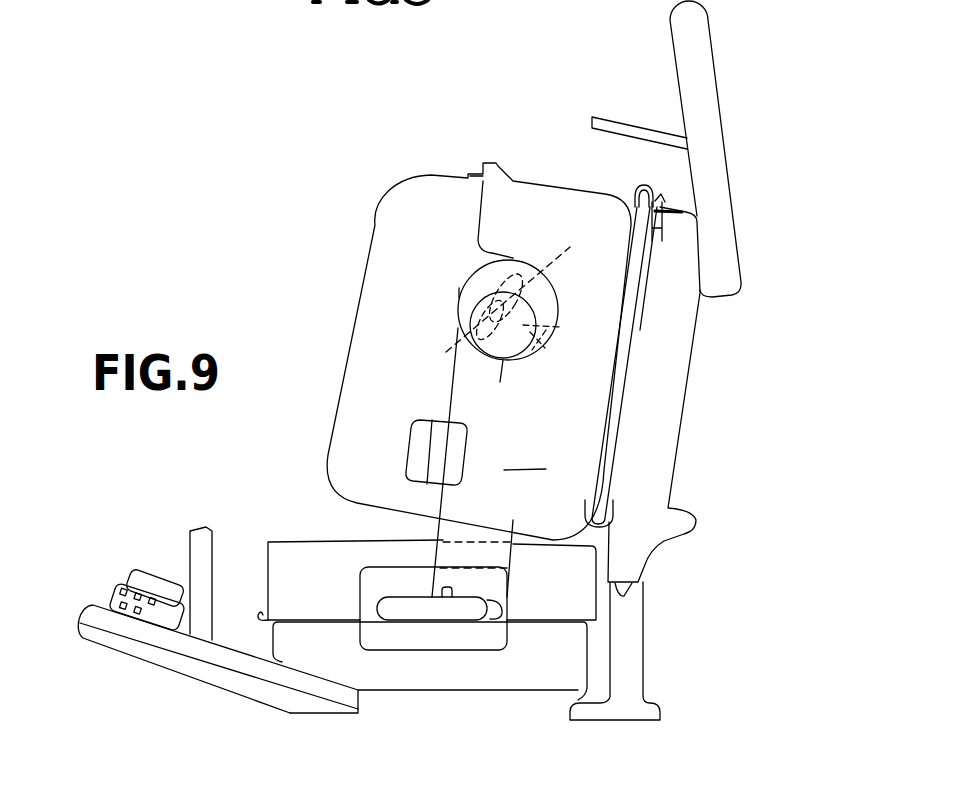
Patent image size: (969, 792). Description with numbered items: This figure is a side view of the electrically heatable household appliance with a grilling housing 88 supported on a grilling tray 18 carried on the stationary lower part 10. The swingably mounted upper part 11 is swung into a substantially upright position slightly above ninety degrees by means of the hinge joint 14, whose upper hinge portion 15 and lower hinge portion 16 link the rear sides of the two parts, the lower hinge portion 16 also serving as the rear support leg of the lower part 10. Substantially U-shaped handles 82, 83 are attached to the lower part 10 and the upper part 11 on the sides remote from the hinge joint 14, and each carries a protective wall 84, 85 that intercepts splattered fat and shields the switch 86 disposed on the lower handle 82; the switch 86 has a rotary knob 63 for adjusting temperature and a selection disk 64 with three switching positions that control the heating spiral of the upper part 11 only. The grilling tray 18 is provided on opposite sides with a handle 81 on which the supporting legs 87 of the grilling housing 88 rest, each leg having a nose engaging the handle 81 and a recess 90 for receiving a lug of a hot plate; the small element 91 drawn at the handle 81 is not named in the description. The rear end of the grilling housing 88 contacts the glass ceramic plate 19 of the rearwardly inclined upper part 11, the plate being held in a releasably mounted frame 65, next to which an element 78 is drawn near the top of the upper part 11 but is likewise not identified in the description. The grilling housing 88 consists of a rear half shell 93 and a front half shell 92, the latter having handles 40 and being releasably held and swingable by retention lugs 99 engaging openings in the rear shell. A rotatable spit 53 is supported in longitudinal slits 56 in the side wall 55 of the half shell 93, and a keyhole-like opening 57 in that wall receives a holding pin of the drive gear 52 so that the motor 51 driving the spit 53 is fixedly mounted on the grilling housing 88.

The lower part 10 is at (316, 609).
The upper part 11 is at (668, 364).
The hinge joint 14 is at (641, 629).
The upper hinge portion 15 is at (632, 671).
The lower hinge portion 16 is at (647, 559).
The grilling tray 18 is at (292, 548).
The glass ceramic plate 19 is at (640, 196).
The handles 40 is at (411, 446).
The motor 51 is at (503, 360).
The drive gear 52 is at (550, 300).
The rotatable spit 53 is at (450, 293).
The side wall 55 is at (525, 458).
The longitudinal slits 56 is at (497, 297).
The keyhole-like opening 57 is at (562, 327).
The rotary knob 63 is at (157, 571).
The selection disk 64 is at (106, 595).
The frame 65 is at (665, 336).
The clip 78 is at (652, 191).
The handle 81 is at (431, 609).
The handle 82 is at (98, 637).
The handle 83 is at (681, 149).
The protective wall 84 is at (207, 543).
The protective wall 85 is at (618, 127).
The switch 86 is at (113, 578).
The supporting legs 87 is at (450, 462).
The grilling housing 88 is at (458, 335).
The recesses 90 is at (452, 587).
The hook 91 is at (503, 613).
The half shell 92 is at (360, 312).
The half shell 93 is at (563, 198).
The retention lugs 99 is at (512, 150).